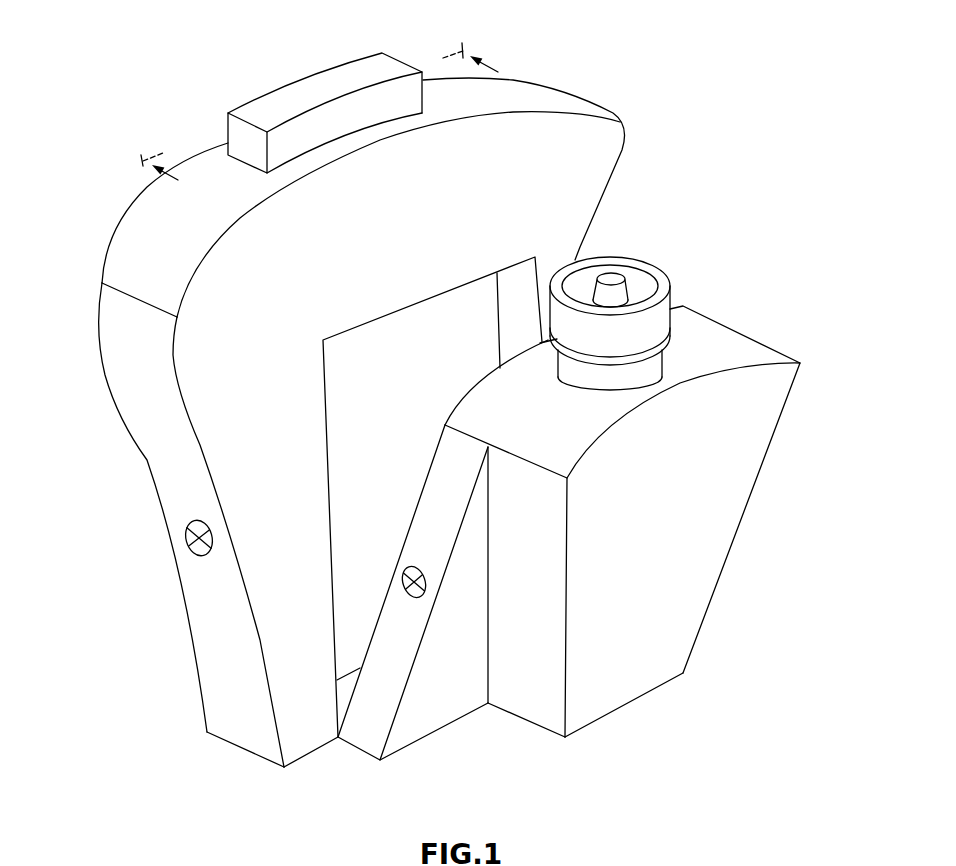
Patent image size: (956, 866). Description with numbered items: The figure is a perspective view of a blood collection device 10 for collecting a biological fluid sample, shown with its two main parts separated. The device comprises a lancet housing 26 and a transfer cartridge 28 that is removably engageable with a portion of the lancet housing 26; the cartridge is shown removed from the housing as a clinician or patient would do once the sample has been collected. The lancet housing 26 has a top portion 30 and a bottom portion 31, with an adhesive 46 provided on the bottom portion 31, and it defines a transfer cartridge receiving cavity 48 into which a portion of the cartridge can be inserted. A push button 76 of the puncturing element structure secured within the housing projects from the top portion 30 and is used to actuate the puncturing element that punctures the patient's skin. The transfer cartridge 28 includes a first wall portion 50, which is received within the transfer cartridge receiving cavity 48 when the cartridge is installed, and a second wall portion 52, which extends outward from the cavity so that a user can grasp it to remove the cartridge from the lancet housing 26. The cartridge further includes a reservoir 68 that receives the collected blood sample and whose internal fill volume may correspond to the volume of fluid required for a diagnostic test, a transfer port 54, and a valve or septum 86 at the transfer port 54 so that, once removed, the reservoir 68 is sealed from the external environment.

The blood collection device 10 is at (155, 739).
The lancet housing 26 is at (120, 407).
The transfer cartridge 28 is at (718, 500).
The top portion 30 is at (547, 100).
The bottom portion 31 is at (308, 753).
The adhesive 46 is at (245, 753).
The transfer cartridge receiving cavity 48 is at (362, 372).
The first wall portion 50 is at (373, 735).
The second wall portion 52 is at (530, 697).
The transfer port 54 is at (655, 318).
The reservoir 68 is at (648, 594).
The push button 76 is at (315, 90).
The valve or septum 86 is at (675, 352).